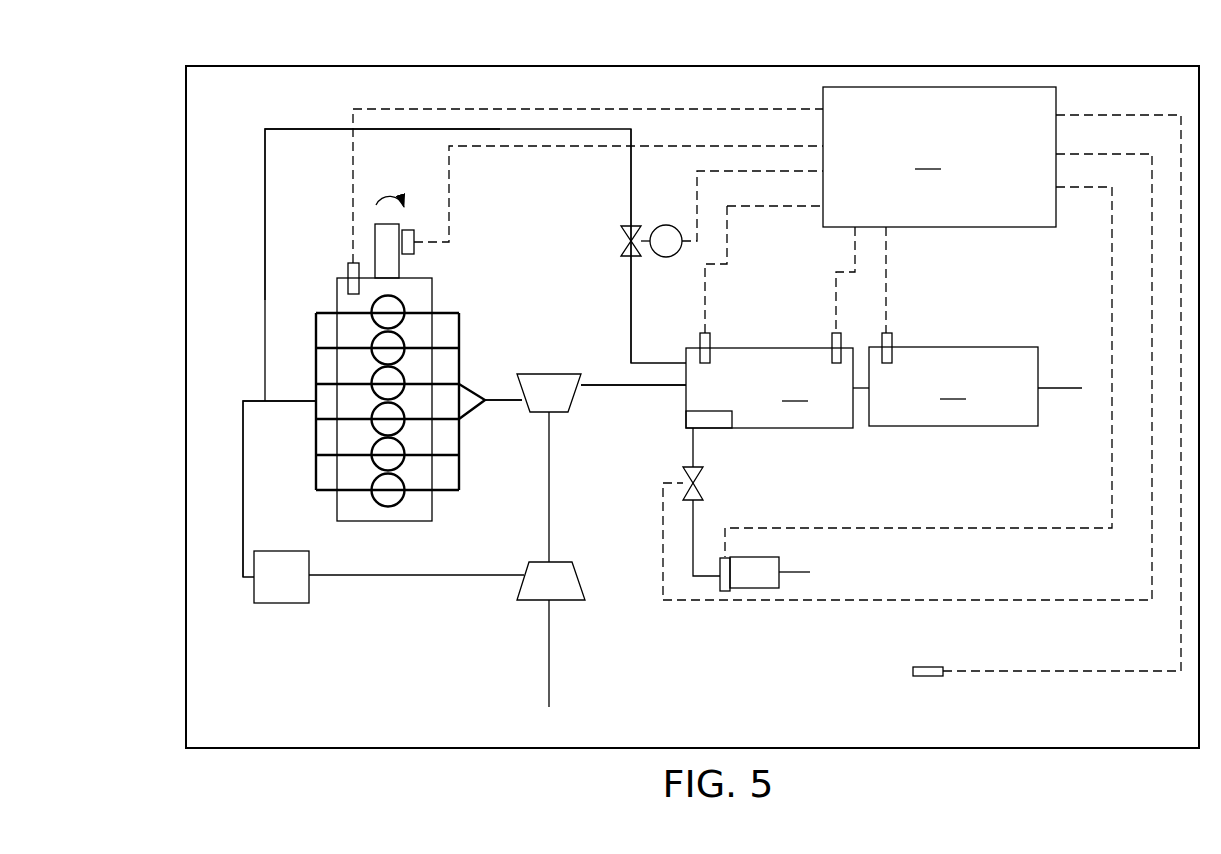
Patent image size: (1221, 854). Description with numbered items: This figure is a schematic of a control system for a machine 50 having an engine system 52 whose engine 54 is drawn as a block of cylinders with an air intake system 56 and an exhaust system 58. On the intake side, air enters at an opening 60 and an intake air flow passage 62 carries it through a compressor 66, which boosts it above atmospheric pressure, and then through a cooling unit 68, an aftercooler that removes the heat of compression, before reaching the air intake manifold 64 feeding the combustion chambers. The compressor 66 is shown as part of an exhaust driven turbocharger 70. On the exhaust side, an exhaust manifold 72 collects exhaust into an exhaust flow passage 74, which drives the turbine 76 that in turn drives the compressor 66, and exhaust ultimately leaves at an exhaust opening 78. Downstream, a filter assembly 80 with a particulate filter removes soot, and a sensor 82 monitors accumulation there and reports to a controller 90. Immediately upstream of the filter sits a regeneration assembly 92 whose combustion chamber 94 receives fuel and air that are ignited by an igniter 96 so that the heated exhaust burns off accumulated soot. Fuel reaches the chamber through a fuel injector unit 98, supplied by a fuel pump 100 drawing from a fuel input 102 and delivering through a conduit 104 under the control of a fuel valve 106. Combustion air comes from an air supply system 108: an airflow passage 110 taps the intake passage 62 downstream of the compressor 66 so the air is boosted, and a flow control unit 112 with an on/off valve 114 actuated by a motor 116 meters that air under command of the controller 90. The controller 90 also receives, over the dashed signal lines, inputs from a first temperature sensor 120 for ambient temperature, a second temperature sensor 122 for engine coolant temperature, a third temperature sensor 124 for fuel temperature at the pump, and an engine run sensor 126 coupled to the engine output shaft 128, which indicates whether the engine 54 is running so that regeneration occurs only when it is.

The machine 50 is at (663, 66).
The engine system 52 is at (401, 364).
The engine 54 is at (316, 313).
The air intake system 56 is at (389, 602).
The exhaust system 58 is at (620, 403).
The opening 60 is at (551, 696).
The intake air flow passage 62 is at (243, 458).
The air intake manifold 64 is at (316, 448).
The compressor 66 is at (577, 573).
The cooling unit 68 is at (281, 603).
The turbocharger 70 is at (535, 413).
The exhaust manifold 72 is at (460, 490).
The exhaust flow passage 74 is at (606, 385).
The turbine 76 is at (520, 374).
The exhaust opening 78 is at (1082, 388).
The filter assembly 80 is at (953, 386).
The sensor 82 is at (892, 336).
The controller 90 is at (922, 379).
The regeneration assembly 92 is at (886, 386).
The combustion chamber 94 is at (769, 388).
The igniter 96 is at (710, 333).
The fuel injector unit 98 is at (705, 411).
The fuel pump 100 is at (780, 562).
The fuel input 102 is at (810, 572).
The conduit 104 is at (712, 525).
The fuel valve 106 is at (700, 485).
The air supply system 108 is at (322, 129).
The airflow passage 110 is at (265, 265).
The flow control unit 112 is at (674, 246).
The valve 114 is at (620, 245).
The motor 116 is at (668, 258).
The first temperature sensor 120 is at (928, 677).
The second temperature sensor 122 is at (350, 265).
The third temperature sensor 124 is at (726, 592).
The engine run sensor 126 is at (414, 236).
The output shaft 128 is at (375, 236).